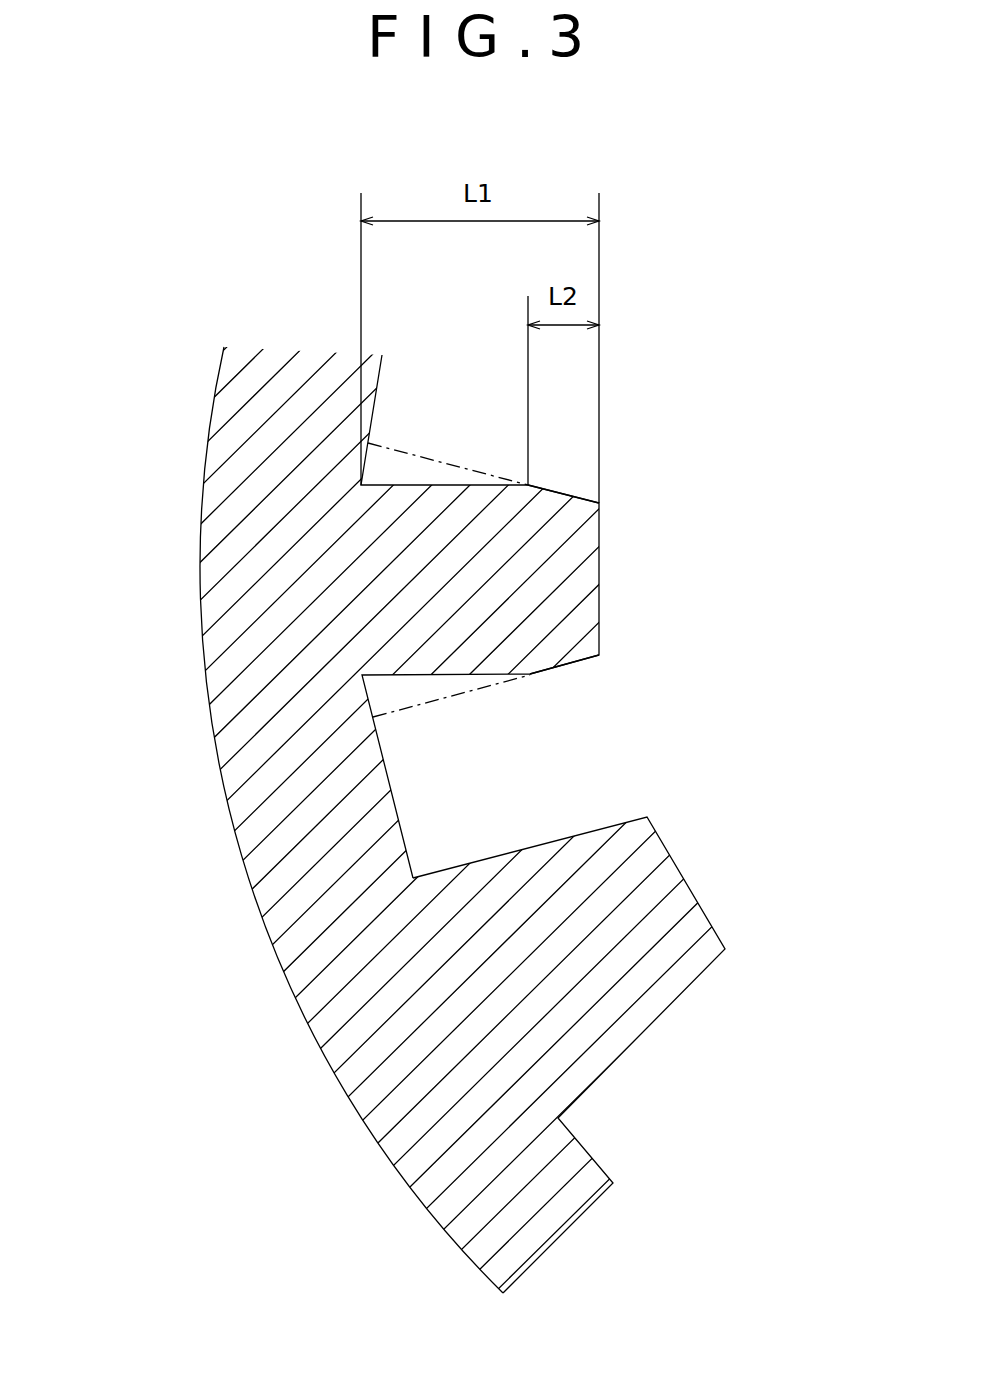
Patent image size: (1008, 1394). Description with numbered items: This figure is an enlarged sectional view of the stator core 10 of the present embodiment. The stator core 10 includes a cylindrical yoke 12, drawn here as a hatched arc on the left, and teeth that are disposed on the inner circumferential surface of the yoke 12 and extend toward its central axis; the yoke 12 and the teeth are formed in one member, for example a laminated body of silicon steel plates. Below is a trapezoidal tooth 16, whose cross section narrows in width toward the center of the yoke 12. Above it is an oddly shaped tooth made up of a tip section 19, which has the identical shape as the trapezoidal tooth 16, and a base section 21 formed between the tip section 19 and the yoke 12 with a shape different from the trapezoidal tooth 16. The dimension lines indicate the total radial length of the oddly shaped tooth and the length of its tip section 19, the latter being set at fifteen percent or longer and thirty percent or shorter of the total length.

The stator core 10 is at (199, 519).
The yoke 12 is at (243, 698).
The trapezoidal tooth 16 is at (643, 938).
The tip section 19 is at (585, 472).
The base section 21 is at (430, 677).